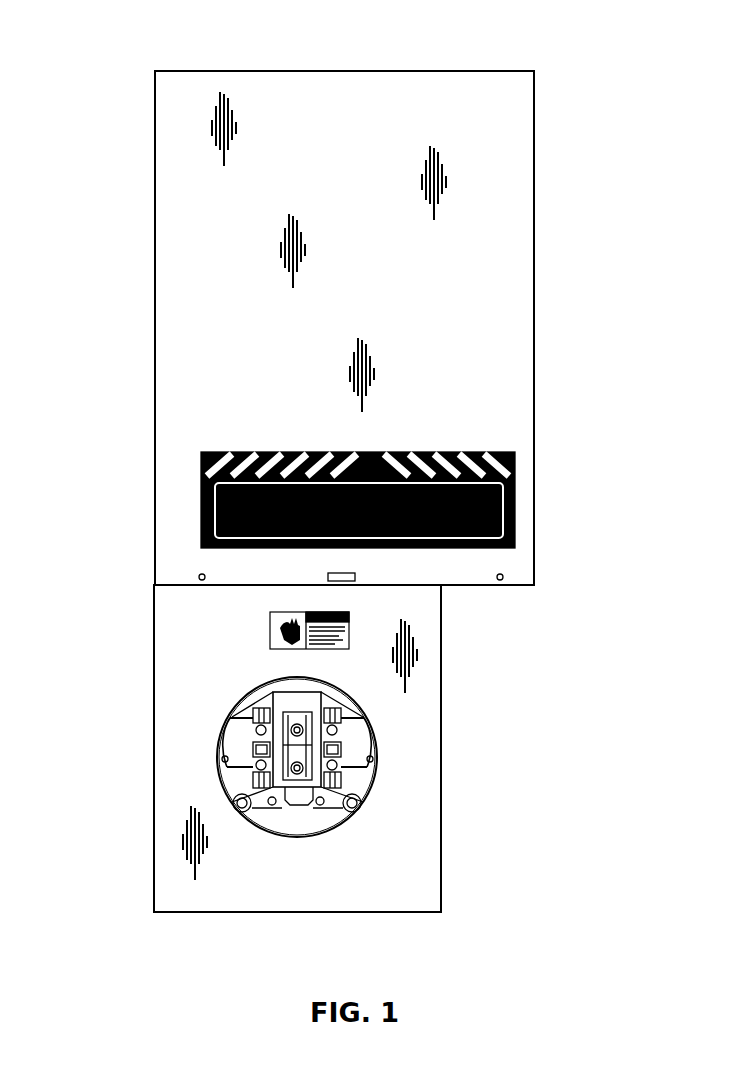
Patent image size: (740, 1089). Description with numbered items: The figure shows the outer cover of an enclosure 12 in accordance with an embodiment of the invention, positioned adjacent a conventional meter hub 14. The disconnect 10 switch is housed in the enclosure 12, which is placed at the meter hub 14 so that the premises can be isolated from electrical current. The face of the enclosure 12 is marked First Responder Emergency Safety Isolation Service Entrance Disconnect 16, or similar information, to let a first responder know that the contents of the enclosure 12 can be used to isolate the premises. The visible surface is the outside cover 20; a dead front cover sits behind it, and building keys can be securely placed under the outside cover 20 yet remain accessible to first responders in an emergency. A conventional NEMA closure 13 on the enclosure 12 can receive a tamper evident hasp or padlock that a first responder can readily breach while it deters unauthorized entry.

The disconnect switch 10 is at (378, 494).
The enclosure 12 is at (527, 215).
The NEMA closure 13 is at (343, 577).
The meter hub 14 is at (160, 897).
The First Responder Emergency Safety Isolation Service Entrance Disconnect marking 16 is at (202, 492).
The outside cover 20 is at (203, 223).